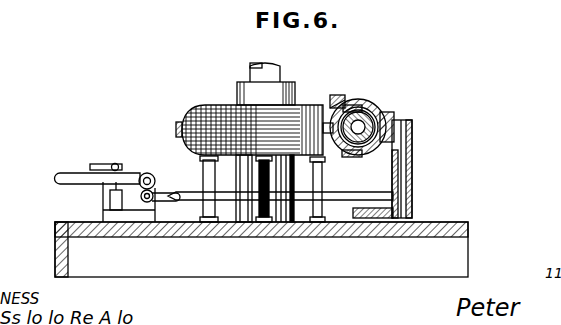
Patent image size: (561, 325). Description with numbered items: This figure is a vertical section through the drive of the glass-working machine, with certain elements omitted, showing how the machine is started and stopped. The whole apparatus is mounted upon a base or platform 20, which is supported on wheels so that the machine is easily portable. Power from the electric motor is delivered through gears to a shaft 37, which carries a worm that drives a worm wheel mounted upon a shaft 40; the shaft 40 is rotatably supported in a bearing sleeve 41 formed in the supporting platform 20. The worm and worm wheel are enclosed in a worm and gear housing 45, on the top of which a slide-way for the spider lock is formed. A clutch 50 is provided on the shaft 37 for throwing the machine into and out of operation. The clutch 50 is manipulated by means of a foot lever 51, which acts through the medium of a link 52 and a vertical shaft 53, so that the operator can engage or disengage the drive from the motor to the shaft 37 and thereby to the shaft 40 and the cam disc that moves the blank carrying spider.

The base or platform 20 is at (455, 222).
The shaft 37 is at (363, 107).
The shaft 40 is at (248, 70).
The bearing sleeve 41 is at (282, 238).
The worm and gear housing 45 is at (305, 105).
The clutch 50 is at (386, 112).
The foot lever 51 is at (76, 175).
The link 52 is at (338, 238).
The vertical shaft 53 is at (413, 143).